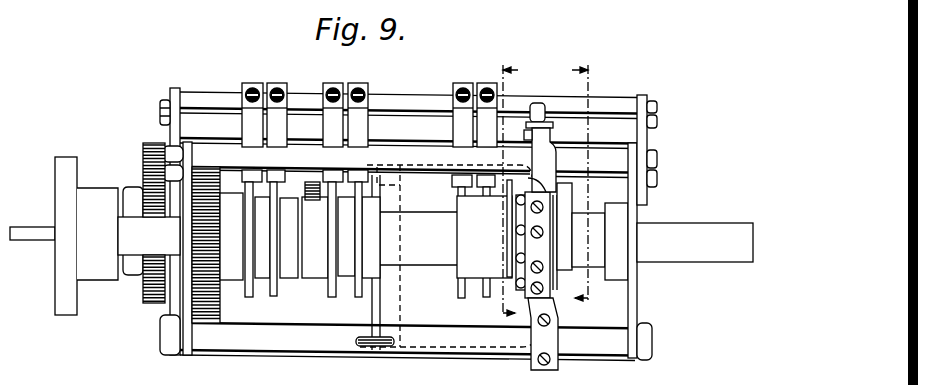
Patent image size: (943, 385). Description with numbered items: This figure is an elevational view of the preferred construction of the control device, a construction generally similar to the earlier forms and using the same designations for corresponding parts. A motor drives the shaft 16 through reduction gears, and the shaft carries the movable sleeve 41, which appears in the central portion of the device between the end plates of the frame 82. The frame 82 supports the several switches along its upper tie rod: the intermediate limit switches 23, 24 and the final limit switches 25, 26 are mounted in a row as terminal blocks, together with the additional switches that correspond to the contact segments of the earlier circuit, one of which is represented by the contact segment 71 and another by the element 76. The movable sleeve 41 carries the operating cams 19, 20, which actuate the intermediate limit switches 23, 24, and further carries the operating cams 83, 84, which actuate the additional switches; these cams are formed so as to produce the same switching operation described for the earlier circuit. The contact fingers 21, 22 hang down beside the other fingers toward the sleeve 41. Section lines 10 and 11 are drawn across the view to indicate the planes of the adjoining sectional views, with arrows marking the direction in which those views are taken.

The section line 10- 10 is at (518, 193).
The section line 11- 11 is at (571, 187).
The shaft 16 is at (692, 254).
The operating cam 19 is at (487, 299).
The operating cam 20 is at (461, 299).
The contact finger 21 is at (274, 297).
The contact finger 22 is at (253, 295).
The intermediate limit switch 23 is at (487, 115).
The intermediate limit switch 24 is at (463, 115).
The final limit switch 25 is at (277, 115).
The final limit switch 26 is at (252, 115).
The movable sleeve 41 is at (435, 256).
The contact segment 71 is at (358, 115).
The terminal 76 is at (333, 115).
The frame 82 is at (623, 107).
The operating cam 83 is at (360, 297).
The operating cam 84 is at (334, 297).